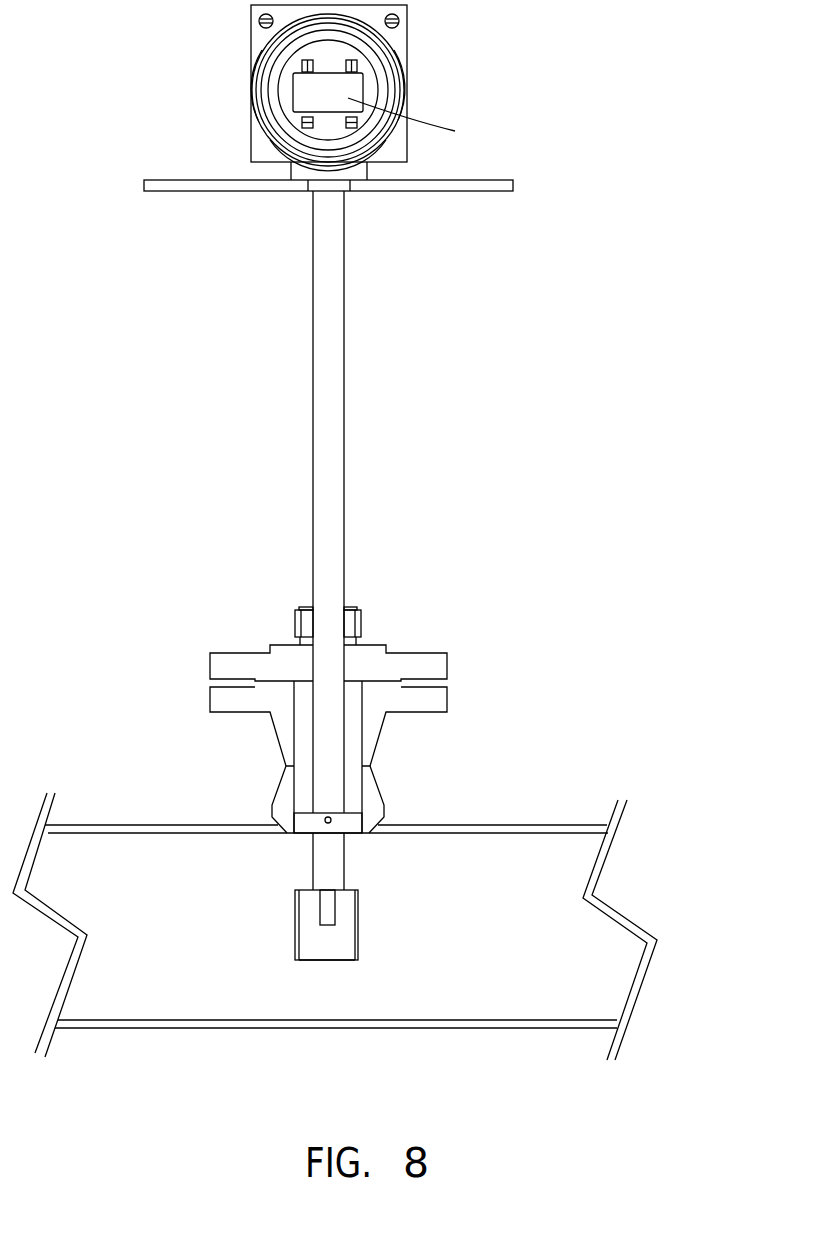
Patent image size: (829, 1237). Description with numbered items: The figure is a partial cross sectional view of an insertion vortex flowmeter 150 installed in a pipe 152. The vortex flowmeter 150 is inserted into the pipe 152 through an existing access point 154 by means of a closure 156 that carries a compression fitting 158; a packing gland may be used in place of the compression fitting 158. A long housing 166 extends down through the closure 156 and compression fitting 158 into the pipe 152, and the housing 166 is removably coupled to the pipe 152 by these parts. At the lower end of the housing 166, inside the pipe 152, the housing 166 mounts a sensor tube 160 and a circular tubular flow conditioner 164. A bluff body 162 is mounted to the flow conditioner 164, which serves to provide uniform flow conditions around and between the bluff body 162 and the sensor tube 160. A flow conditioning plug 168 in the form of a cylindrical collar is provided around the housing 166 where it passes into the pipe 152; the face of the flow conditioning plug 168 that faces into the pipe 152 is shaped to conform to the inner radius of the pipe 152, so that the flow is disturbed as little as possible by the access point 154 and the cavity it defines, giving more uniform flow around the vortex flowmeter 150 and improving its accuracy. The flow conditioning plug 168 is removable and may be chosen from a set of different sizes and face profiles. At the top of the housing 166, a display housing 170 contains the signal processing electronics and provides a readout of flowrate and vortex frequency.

The vortex flowmeter 150 is at (483, 442).
The pipe 152 is at (97, 813).
The access point 154 is at (378, 740).
The closure 156 is at (447, 668).
The compression fitting 158 is at (279, 612).
The sensor tube 160 is at (351, 913).
The bluff body 162 is at (282, 931).
The flow conditioner 164 is at (340, 962).
The housing 166 is at (344, 568).
The flow conditioning plug 168 is at (294, 812).
The display housing 170 is at (224, 55).